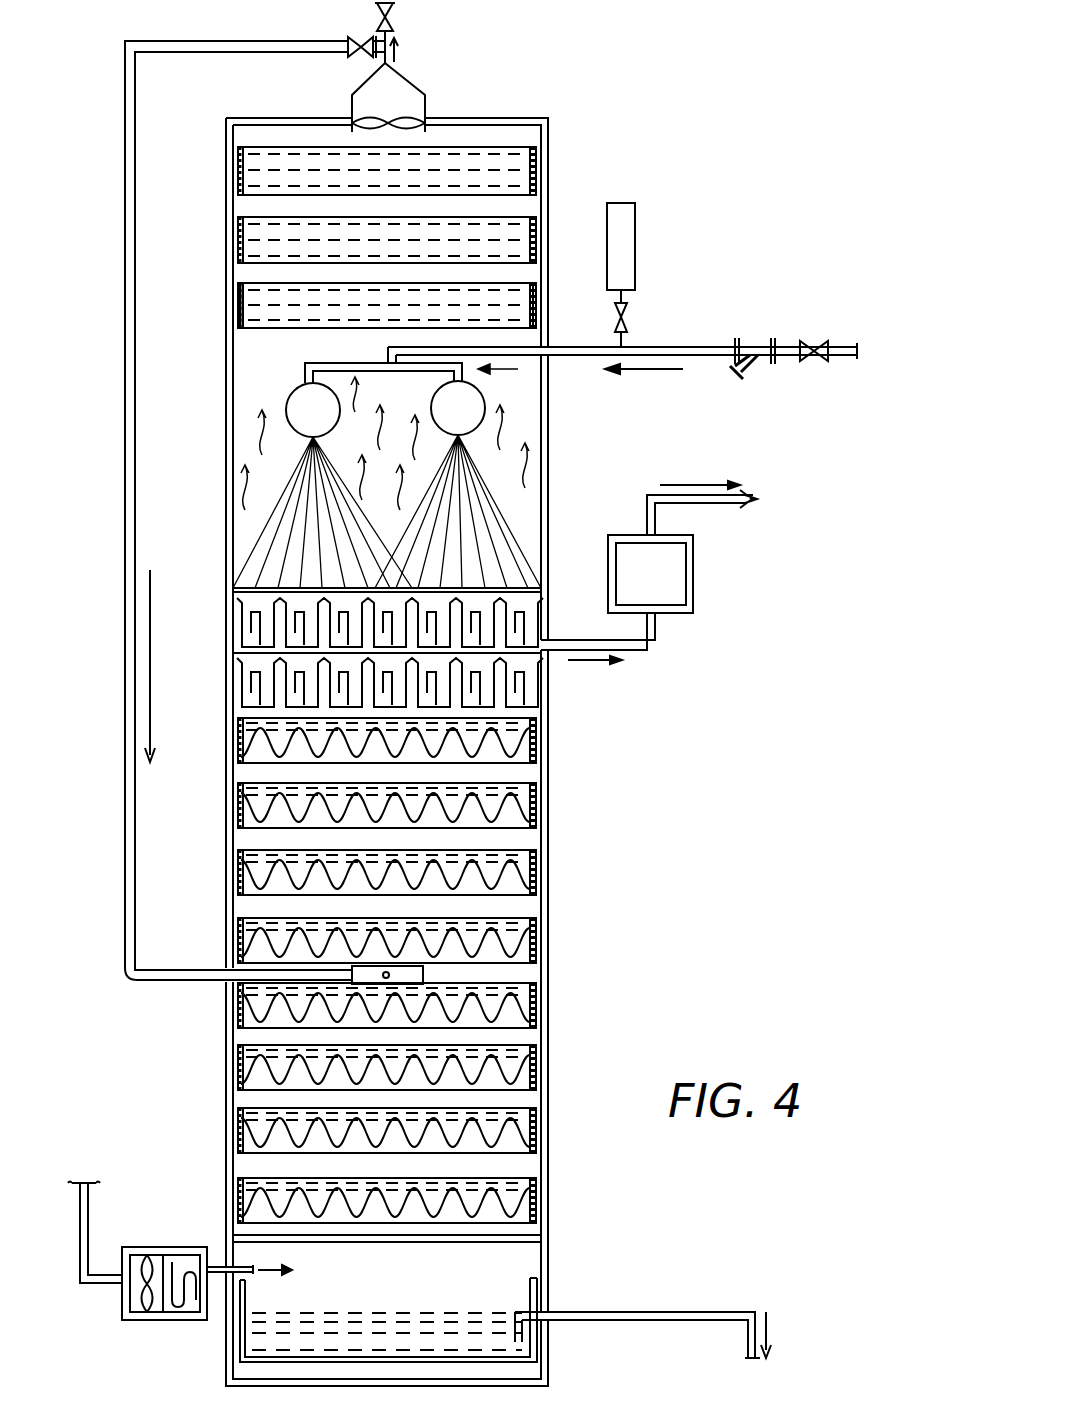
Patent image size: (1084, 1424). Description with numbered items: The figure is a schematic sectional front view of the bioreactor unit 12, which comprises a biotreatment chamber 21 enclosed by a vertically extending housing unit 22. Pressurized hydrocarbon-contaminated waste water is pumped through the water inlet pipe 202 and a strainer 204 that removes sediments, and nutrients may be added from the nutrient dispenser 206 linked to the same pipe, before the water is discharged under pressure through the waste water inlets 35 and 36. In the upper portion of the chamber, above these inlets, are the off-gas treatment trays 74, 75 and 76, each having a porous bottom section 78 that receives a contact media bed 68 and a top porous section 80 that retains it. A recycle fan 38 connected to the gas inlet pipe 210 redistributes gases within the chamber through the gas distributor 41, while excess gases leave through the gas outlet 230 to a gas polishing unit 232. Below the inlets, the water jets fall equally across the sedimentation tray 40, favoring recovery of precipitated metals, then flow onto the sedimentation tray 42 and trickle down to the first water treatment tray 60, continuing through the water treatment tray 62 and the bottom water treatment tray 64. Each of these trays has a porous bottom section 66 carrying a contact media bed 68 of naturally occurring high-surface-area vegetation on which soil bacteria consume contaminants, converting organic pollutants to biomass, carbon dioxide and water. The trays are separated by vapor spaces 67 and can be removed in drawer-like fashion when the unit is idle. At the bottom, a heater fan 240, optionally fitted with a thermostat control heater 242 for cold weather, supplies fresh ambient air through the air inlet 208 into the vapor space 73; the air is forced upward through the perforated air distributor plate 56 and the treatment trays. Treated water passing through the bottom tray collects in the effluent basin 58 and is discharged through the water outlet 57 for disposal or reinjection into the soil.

The bioreactor unit 12 is at (456, 118).
The biotreatment chamber 21 is at (520, 108).
The housing unit 22 is at (548, 128).
The waste water inlet 35 is at (303, 396).
The waste water inlet 36 is at (472, 410).
The recycle fan 38 is at (410, 116).
The sedimentation tray 40 is at (552, 642).
The gas distributor 41 is at (423, 972).
The sedimentation tray 42 is at (546, 718).
The perforated air distributor plate 56 is at (535, 1238).
The water outlet 57 is at (522, 1335).
The effluent basin 58 is at (455, 1312).
The water treatment tray 60 is at (530, 758).
The water treatment tray 62 is at (530, 820).
The water treatment tray 64 is at (530, 1202).
The porous bottom section 66 is at (240, 200).
The vapor space 67 is at (240, 836).
The contact media bed 68 is at (515, 167).
The vapor space 73 is at (362, 1292).
The off-gas treatment tray 74 is at (515, 188).
The off-gas treatment tray 75 is at (540, 232).
The off-gas treatment tray 76 is at (540, 290).
The porous bottom section 78 is at (538, 328).
The top porous section 80 is at (245, 277).
The water inlet pipe 202 is at (565, 356).
The strainer 204 is at (742, 380).
The nutrient dispenser 206 is at (627, 232).
The air inlet 208 is at (215, 1275).
The gas inlet pipe 210 is at (125, 508).
The gas outlet 230 is at (640, 652).
The gas polishing unit 232 is at (678, 562).
The heater fan 240 is at (155, 1318).
The thermostat control heater 242 is at (155, 1262).